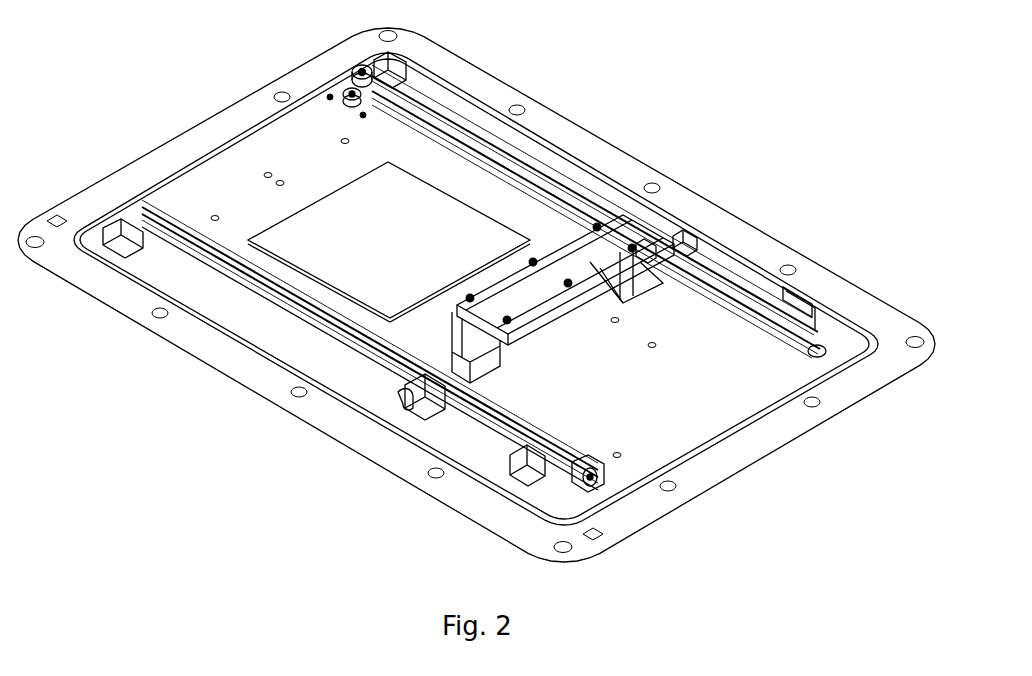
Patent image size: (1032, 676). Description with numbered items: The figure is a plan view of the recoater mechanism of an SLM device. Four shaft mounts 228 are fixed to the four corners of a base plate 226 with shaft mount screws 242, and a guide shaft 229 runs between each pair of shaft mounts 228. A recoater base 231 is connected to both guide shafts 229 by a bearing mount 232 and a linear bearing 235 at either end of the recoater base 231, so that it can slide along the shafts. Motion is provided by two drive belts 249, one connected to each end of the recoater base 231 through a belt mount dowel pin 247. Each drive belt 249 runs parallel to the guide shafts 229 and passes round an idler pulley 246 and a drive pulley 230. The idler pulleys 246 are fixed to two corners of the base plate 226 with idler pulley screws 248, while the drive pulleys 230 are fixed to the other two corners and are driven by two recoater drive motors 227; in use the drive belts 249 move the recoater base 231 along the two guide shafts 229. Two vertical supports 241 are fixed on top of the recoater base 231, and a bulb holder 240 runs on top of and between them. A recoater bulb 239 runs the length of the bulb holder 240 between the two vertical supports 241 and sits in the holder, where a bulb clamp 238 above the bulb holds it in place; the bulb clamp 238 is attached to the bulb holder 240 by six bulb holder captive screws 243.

The base plate 226 is at (710, 398).
The recoater drive motor 227 is at (350, 95).
The shaft mount 228 is at (510, 473).
The guide shaft 229 is at (710, 243).
The drive pulley 230 is at (362, 68).
The recoater base 231 is at (657, 285).
The bearing mount 232 is at (400, 408).
The linear bearing 235 is at (397, 398).
The bulb clamp 238 is at (467, 302).
The recoater bulb 239 is at (522, 288).
The bulb holder 240 is at (533, 313).
The vertical support 241 is at (625, 288).
The shaft mount screw 242 is at (383, 72).
The bulb holder captive screw 243 is at (568, 283).
The idler pulley 246 is at (584, 480).
The belt mount dowel pin 247 is at (660, 240).
The idler pulley screw 248 is at (596, 472).
The drive belt 249 is at (182, 248).